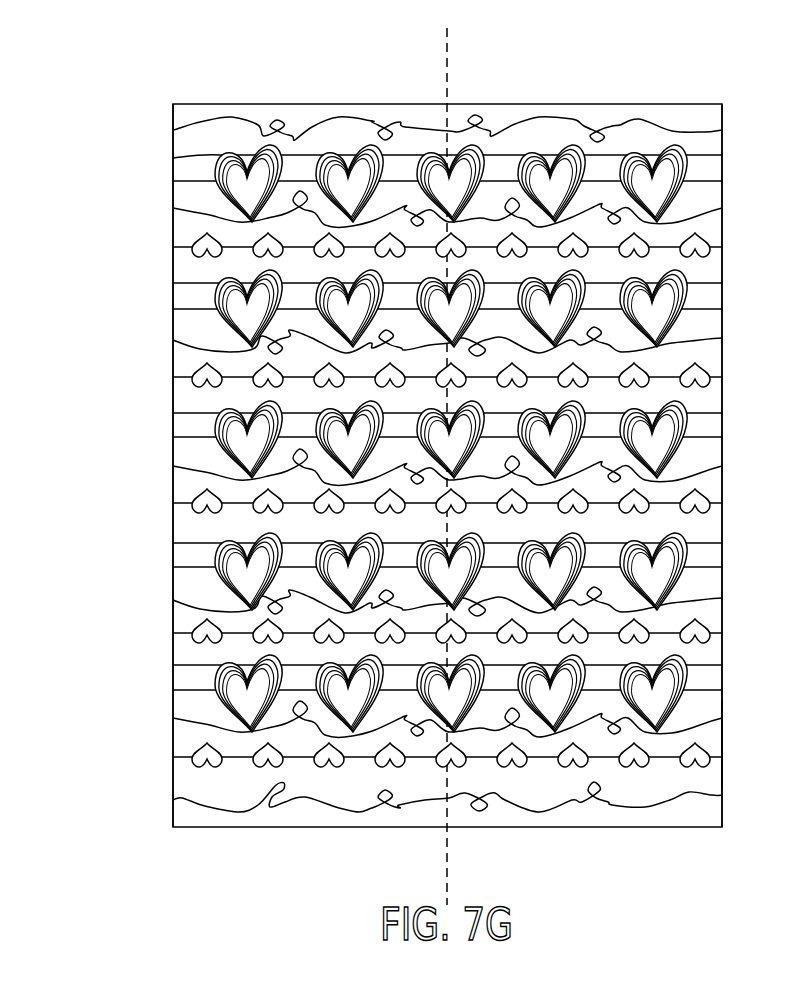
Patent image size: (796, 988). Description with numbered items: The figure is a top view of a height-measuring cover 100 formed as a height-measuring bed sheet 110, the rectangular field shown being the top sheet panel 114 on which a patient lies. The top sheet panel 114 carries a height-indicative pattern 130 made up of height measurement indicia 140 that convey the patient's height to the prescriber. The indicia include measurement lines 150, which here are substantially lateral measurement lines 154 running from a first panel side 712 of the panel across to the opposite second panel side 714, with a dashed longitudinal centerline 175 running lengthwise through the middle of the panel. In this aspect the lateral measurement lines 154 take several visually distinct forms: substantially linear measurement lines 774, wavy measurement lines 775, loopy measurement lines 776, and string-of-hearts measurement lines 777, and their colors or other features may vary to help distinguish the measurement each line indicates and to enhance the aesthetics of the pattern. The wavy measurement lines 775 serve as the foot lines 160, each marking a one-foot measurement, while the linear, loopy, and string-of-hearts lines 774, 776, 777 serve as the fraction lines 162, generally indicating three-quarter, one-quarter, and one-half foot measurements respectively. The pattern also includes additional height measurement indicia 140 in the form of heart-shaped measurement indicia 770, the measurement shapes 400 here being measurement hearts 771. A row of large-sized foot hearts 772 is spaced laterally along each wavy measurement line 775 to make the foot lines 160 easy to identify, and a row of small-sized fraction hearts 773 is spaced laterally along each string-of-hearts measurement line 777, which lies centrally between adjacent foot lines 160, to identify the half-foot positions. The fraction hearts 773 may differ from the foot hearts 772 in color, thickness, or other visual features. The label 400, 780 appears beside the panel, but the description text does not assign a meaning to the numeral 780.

The height-measuring cover 100 is at (404, 426).
The height-measuring bed sheet 110 is at (160, 122).
The top sheet panel 114 is at (663, 523).
The height-indicative pattern 130 is at (147, 355).
The height measurement indicia 140 is at (195, 372).
The measurement lines 150 is at (401, 766).
The substantially lateral measurement lines 154 is at (190, 690).
The foot lines 160 is at (195, 561).
The fraction lines 162 is at (208, 122).
The longitudinal centerline 175 is at (449, 56).
The measurement shapes 400 is at (640, 502).
The first panel side 712 is at (175, 520).
The second panel side 714 is at (722, 583).
The heart-shaped measurement indicia 770 is at (640, 502).
The measurement hearts 771 is at (555, 178).
The large-sized foot hearts 772 is at (268, 178).
The small-sized fraction hearts 773 is at (390, 763).
The substantially linear measurement lines 774 is at (710, 283).
The wavy measurement lines 775 is at (710, 309).
The loopy measurement lines 776 is at (700, 345).
The string-of-hearts measurement lines 777 is at (670, 376).
The embroidered element 780 is at (758, 745).